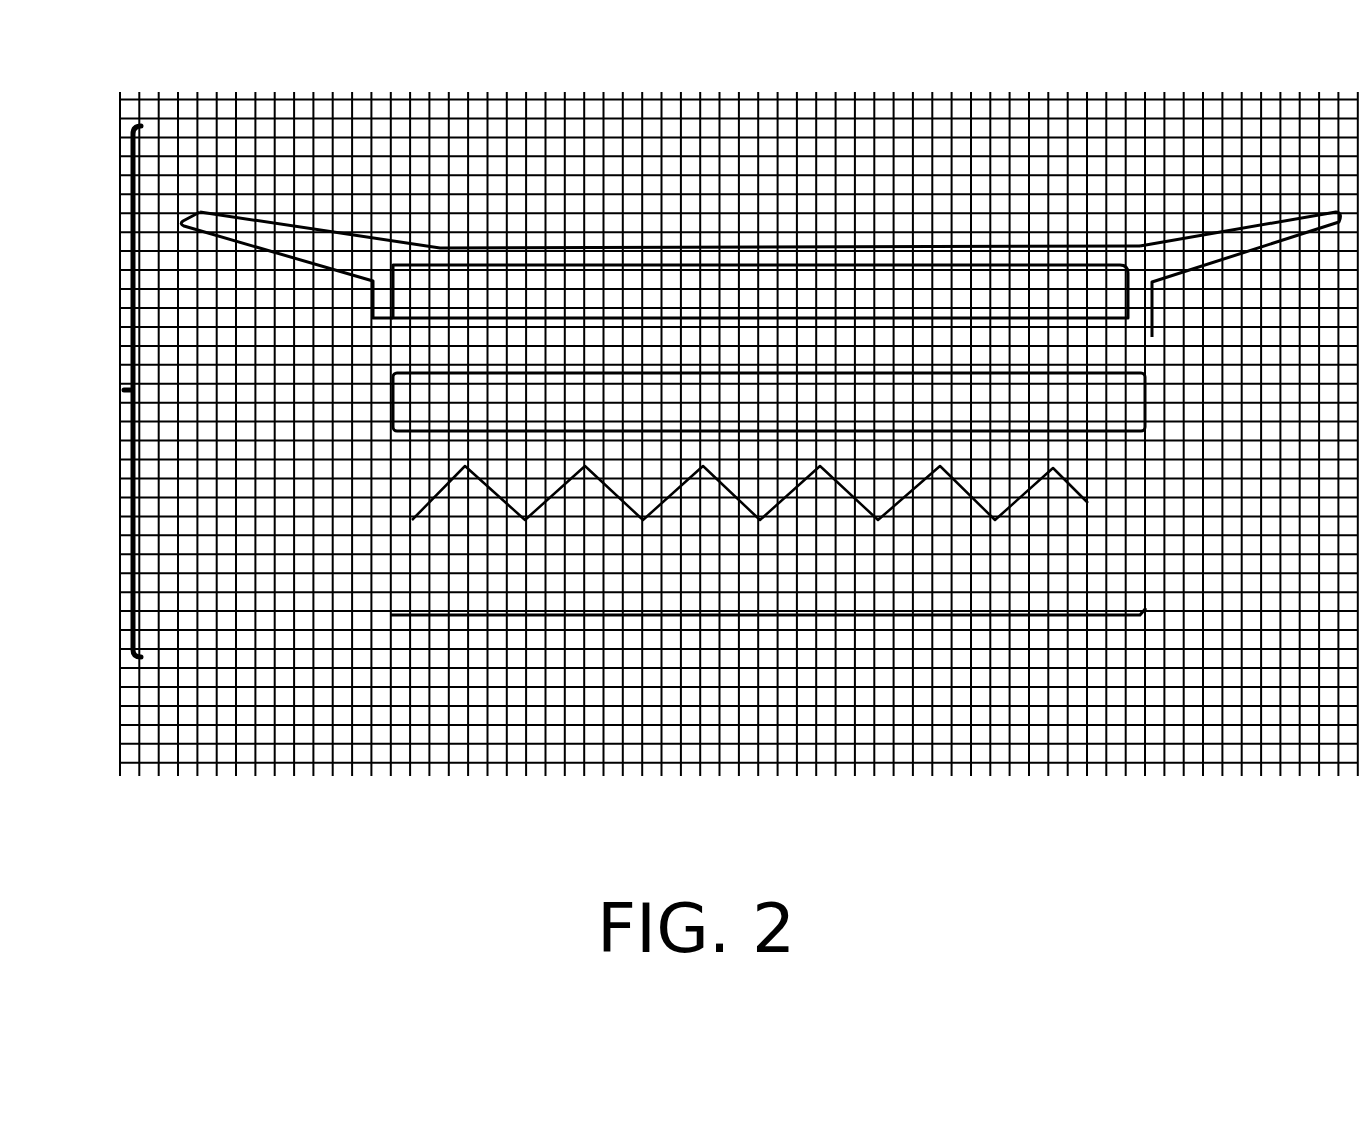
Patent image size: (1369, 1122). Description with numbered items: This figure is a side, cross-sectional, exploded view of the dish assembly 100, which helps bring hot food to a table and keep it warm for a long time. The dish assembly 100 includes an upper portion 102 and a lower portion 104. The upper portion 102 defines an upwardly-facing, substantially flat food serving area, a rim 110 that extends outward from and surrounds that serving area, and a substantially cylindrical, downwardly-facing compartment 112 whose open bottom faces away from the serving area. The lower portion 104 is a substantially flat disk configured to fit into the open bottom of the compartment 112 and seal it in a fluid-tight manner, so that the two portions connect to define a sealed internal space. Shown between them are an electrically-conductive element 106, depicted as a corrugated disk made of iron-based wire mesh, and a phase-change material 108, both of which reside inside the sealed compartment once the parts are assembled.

The dish assembly 100 is at (78, 391).
The upper portion 102 is at (596, 240).
The lower portion 104 is at (1054, 606).
The electrically-conductive element 106 is at (1092, 507).
The phase-change material 108 is at (1133, 405).
The rim 110 is at (292, 240).
The compartment 112 is at (930, 295).